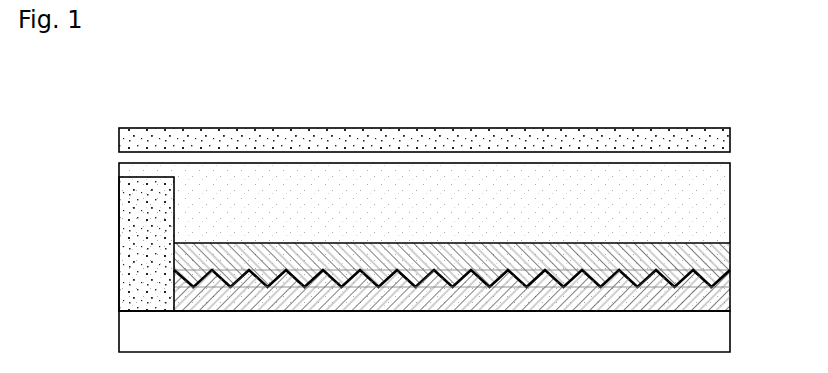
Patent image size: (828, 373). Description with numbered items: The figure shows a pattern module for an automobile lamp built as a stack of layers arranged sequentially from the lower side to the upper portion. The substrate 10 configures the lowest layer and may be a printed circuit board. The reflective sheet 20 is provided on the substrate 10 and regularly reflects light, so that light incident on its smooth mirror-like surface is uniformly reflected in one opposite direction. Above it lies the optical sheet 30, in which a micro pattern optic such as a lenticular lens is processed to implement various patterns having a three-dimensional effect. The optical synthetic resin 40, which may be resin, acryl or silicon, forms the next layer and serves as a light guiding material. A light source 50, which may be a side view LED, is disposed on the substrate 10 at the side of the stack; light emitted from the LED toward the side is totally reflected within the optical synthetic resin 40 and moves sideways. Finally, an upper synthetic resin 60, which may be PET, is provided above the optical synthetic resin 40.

The substrate 10 is at (718, 333).
The reflective sheet 20 is at (718, 305).
The optical sheet 30 is at (718, 258).
The optical synthetic resin 40 is at (718, 218).
The light source 50 is at (133, 265).
The upper synthetic resin 60 is at (720, 140).